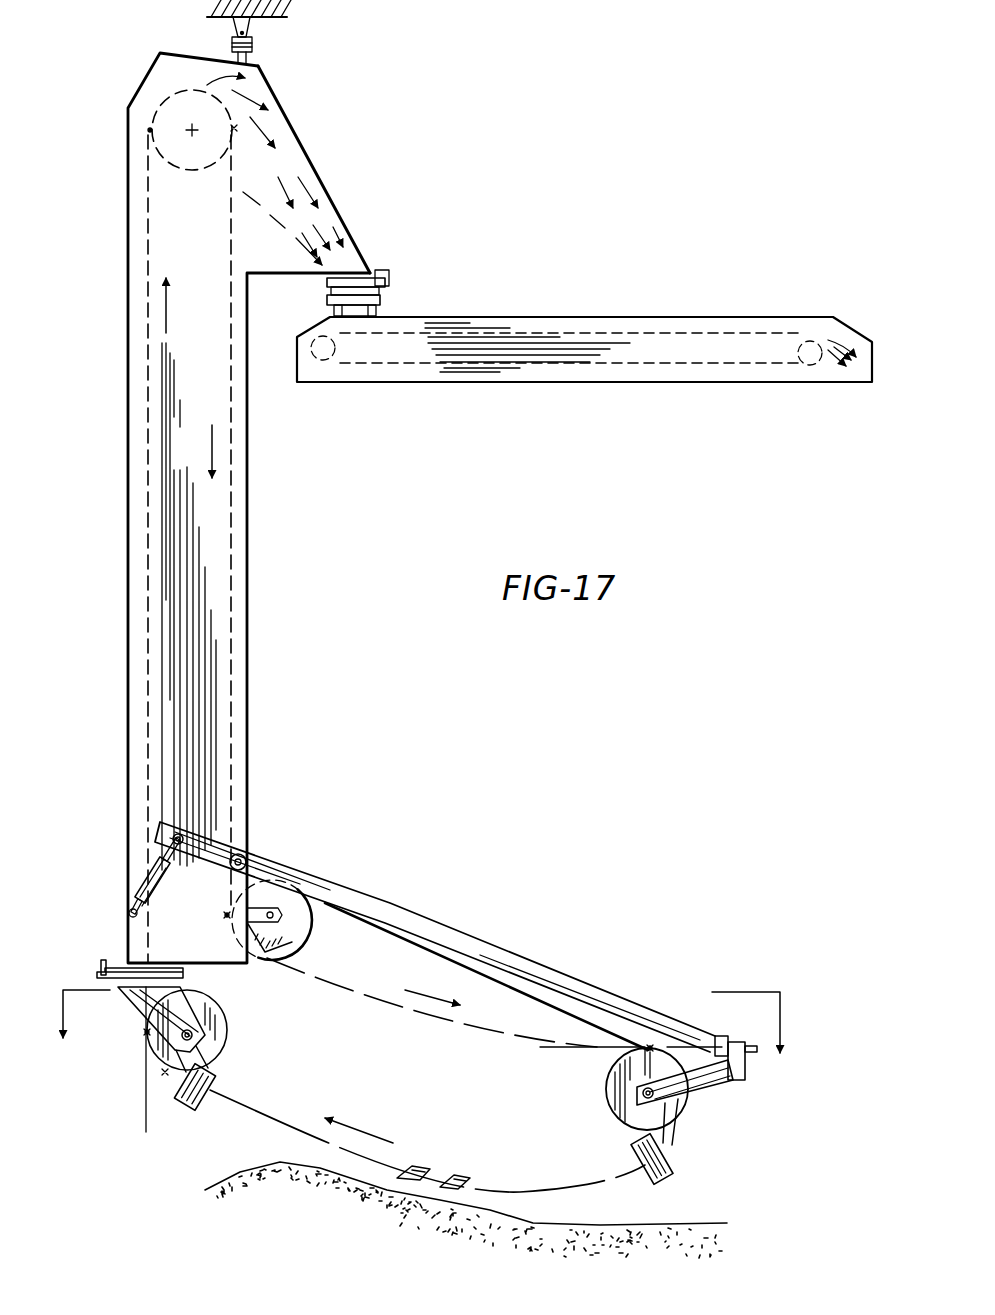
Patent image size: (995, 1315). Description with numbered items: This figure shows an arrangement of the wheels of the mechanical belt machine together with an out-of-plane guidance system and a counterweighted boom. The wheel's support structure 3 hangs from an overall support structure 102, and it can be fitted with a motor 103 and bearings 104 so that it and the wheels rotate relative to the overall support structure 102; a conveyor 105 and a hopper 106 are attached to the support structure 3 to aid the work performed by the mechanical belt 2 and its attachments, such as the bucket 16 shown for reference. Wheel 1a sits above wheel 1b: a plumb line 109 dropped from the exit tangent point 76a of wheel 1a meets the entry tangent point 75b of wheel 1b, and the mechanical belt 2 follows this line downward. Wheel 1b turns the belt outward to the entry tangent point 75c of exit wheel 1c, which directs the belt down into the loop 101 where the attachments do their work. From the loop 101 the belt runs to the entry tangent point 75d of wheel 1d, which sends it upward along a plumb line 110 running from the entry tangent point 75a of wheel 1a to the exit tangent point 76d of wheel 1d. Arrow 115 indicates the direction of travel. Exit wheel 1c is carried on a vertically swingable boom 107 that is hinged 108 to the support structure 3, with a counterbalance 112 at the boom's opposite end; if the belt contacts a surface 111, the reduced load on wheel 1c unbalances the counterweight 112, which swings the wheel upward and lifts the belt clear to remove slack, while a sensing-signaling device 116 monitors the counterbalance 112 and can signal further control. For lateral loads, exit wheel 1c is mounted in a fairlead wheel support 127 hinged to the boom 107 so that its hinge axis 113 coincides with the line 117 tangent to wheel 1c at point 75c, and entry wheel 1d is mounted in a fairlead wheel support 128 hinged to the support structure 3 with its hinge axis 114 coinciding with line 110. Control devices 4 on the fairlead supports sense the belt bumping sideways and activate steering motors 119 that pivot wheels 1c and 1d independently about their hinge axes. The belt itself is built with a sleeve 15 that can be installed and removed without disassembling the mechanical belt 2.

The overall support structure 102 is at (268, 19).
The hopper 106 is at (313, 150).
The entry tangent point of wheel 1a 75a is at (150, 130).
The wheel 1a is at (170, 163).
The exit tangent point of wheel 1a 76a is at (234, 128).
The arrow 115 is at (167, 322).
The motor 103 is at (388, 281).
The bearings 104 is at (392, 298).
The conveyor 105 is at (588, 318).
The plumb line 110 is at (148, 556).
The plumb line 109 is at (230, 578).
The wheel's support structure 3 is at (248, 647).
The hinge 108 is at (292, 832).
The counterbalance means 112 is at (140, 890).
The sensing-signaling device 116 is at (165, 872).
The entry tangent point of wheel 1b 75b is at (227, 915).
The wheel 1b is at (304, 936).
The vertically swingable boom 107 is at (460, 935).
The hinge axis 113 is at (690, 1032).
The steering motors 119 is at (100, 963).
The fairlead wheel support 128 is at (210, 990).
The entry wheel 1d is at (228, 1050).
The exit tangent point of wheel 1d 76d is at (147, 1030).
The control devices 4 is at (216, 1072).
The hinge axis 114 is at (146, 1110).
The entry tangent point of wheel 1d 75d is at (165, 1072).
The sleeve 15 is at (437, 1024).
The mechanical belt 2 is at (587, 1185).
The loop 101 is at (500, 1190).
The line 117 is at (548, 1048).
The entry tangent point of wheel 1c 75c is at (650, 1048).
The exit wheel 1c is at (612, 1105).
The fairlead wheel support 127 is at (740, 1080).
The bucket 16 is at (420, 1168).
The contacted surface 111 is at (272, 1170).